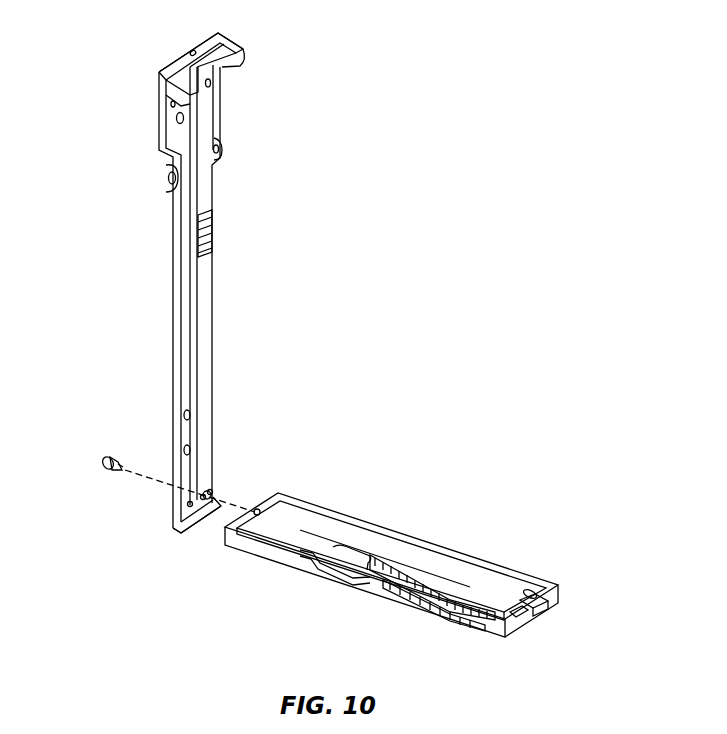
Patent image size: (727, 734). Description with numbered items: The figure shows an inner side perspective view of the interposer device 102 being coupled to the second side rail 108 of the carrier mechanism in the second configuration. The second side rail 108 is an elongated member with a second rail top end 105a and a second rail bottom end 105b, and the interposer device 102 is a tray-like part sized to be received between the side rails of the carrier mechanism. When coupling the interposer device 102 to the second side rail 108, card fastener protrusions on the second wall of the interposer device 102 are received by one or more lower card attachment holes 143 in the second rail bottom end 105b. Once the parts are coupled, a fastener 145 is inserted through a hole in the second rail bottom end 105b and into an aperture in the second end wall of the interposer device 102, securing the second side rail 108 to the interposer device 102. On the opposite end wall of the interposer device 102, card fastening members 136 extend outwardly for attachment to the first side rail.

The interposer device 102 is at (286, 592).
The second rail top end 105a is at (152, 44).
The second rail bottom end 105b is at (179, 540).
The second side rail 108 is at (184, 345).
The card fastening member 136 is at (552, 612).
The lower card attachment hole 143 is at (213, 505).
The fastener 145 is at (107, 457).